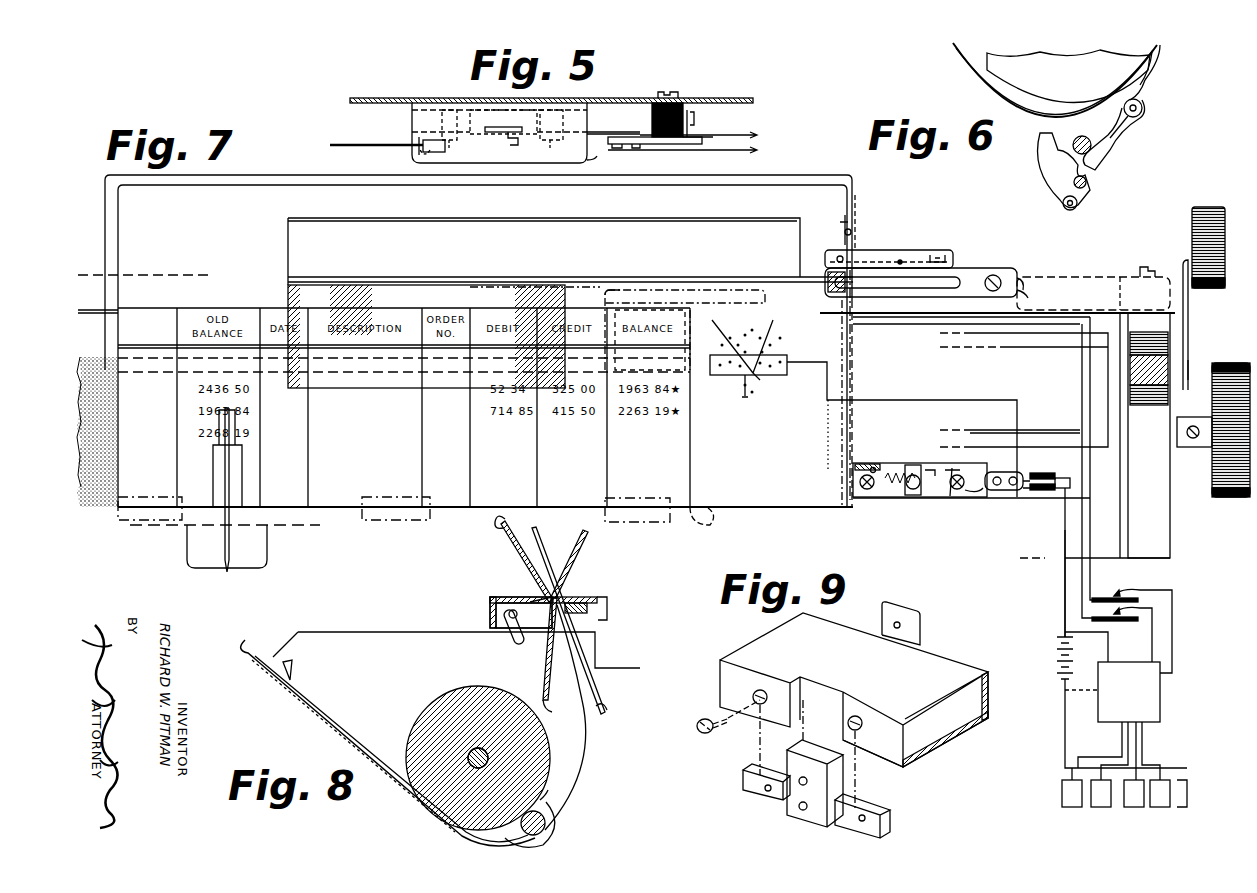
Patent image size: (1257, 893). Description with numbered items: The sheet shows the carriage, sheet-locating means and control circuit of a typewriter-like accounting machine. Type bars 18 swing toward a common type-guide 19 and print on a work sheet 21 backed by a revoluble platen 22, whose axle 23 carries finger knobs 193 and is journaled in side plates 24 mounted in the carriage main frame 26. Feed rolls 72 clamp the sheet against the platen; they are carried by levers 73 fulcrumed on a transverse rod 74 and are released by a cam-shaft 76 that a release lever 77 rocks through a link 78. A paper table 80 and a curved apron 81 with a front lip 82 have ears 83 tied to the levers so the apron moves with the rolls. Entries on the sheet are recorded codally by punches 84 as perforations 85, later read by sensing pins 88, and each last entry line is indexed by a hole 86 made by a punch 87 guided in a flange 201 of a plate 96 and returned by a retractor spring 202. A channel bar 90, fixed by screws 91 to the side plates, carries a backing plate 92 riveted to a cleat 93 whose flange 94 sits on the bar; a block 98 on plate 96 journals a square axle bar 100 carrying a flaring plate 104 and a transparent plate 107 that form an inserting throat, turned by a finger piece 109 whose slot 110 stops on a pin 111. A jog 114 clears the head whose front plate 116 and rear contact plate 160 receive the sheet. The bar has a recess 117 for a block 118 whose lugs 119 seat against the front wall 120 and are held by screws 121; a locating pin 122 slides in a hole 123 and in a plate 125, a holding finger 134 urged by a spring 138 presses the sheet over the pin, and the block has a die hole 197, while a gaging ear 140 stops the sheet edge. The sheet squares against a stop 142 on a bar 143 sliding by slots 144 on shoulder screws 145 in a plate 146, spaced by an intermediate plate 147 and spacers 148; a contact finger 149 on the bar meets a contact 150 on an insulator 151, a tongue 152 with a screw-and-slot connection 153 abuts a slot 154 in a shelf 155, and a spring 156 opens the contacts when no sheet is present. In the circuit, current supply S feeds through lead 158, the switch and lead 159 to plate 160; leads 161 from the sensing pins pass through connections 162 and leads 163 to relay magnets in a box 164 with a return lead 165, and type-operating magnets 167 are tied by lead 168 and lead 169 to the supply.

In FIG. 7, the type bars 18 is at (230, 490).
In FIG. 7, the type-guide 19 is at (242, 456).
In FIG. 5, the work sheet 21 is at (380, 142).
In FIG. 6, the work sheet 21 is at (1160, 48).
In FIG. 7, the work sheet 21 is at (855, 415).
In FIG. 8, the work sheet 21 is at (577, 745).
In FIG. 6, the platen 22 is at (1065, 98).
In FIG. 7, the platen 22 is at (708, 518).
In FIG. 8, the platen 22 is at (440, 702).
In FIG. 7, the platen axle 23 is at (1120, 458).
In FIG. 8, the platen axle 23 is at (470, 752).
In FIG. 7, the side plates 24 is at (1148, 312).
In FIG. 8, the side plates 24 is at (375, 632).
In FIG. 7, the main frame of the carriage 26 is at (1170, 526).
In FIG. 6, the feed rolls 72 is at (1145, 115).
In FIG. 7, the feed rolls 72 is at (362, 522).
In FIG. 8, the feed rolls 72 is at (556, 815).
In FIG. 6, the feed-roll-supporting levers 73 is at (1118, 130).
In FIG. 6, the transverse rod 74 is at (1091, 147).
In FIG. 6, the cam-shaft 76 is at (1087, 182).
In FIG. 7, the feed-roll-release lever 77 is at (1190, 290).
In FIG. 6, the link 78 is at (1043, 168).
In FIG. 7, the link 78 is at (1190, 368).
In FIG. 6, the paper guide 80 is at (965, 65).
In FIG. 8, the paper guide 80 is at (325, 703).
In FIG. 6, the platen apron 81 is at (1147, 80).
In FIG. 8, the platen apron 81 is at (548, 832).
In FIG. 6, the front lip 82 is at (1153, 58).
In FIG. 8, the front lip 82 is at (550, 800).
In FIG. 6, the ears 83 is at (1142, 102).
In FIG. 7, the punches 84 is at (742, 385).
In FIG. 7, the codal perforations 85 is at (775, 372).
In FIG. 7, the sheet locating hole 86 is at (842, 232).
In FIG. 7, the punch 87 is at (828, 282).
In FIG. 7, the sensing pins 88 is at (765, 384).
In FIG. 7, the transverse bar 90 is at (1080, 277).
In FIG. 8, the transverse bar 90 is at (490, 615).
In FIG. 9, the transverse bar 90 is at (925, 691).
In FIG. 7, the screws 91 is at (1142, 266).
In FIG. 7, the transverse plate 92 is at (280, 175).
In FIG. 8, the transverse plate 92 is at (510, 525).
In FIG. 8, the cleat 93 is at (540, 588).
In FIG. 8, the horizontal flange 94 is at (498, 597).
In FIG. 7, the plate 96 is at (995, 268).
In FIG. 8, the plate 96 is at (583, 597).
In FIG. 8, the block 98 is at (607, 610).
In FIG. 7, the square axle bar 100 is at (718, 280).
In FIG. 8, the square axle bar 100 is at (597, 597).
In FIG. 7, the flaring plate 104 is at (660, 218).
In FIG. 8, the flaring plate 104 is at (587, 534).
In FIG. 7, the transparent plate 107 is at (340, 388).
In FIG. 8, the transparent plate 107 is at (603, 712).
In FIG. 8, the finger piece 109 is at (556, 560).
In FIG. 8, the slot 110 is at (512, 648).
In FIG. 8, the pin 111 is at (510, 640).
In FIG. 7, the jog 114 is at (688, 310).
In FIG. 7, the front plate 116 is at (620, 290).
In FIG. 9, the recess 117 is at (806, 690).
In FIG. 9, the block 118 is at (843, 786).
In FIG. 9, the lateral lugs 119 is at (743, 776).
In FIG. 9, the front wall 120 is at (905, 742).
In FIG. 9, the fastening screws 121 is at (705, 734).
In FIG. 7, the sheet locating pin 122 is at (858, 254).
In FIG. 9, the hole 123 is at (800, 790).
In FIG. 9, the plate 125 is at (920, 613).
In FIG. 7, the sheet holding finger 134 is at (900, 260).
In FIG. 7, the spring 138 is at (925, 262).
In FIG. 7, the gaging ear 140 is at (858, 222).
In FIG. 5, the stop 142 is at (420, 150).
In FIG. 7, the stop 142 is at (853, 482).
In FIG. 5, the bar 143 is at (598, 132).
In FIG. 7, the bar 143 is at (880, 490).
In FIG. 7, the slots 144 is at (983, 492).
In FIG. 5, the shoulder screws 145 is at (497, 137).
In FIG. 7, the shoulder screws 145 is at (962, 490).
In FIG. 7, the plate 146 is at (1122, 300).
In FIG. 5, the intermediate plate 147 is at (415, 104).
In FIG. 7, the intermediate plate 147 is at (1000, 472).
In FIG. 5, the spacers 148 is at (448, 98).
In FIG. 5, the contact finger 149 is at (660, 150).
In FIG. 7, the contact finger 149 is at (1060, 490).
In FIG. 5, the contact 150 is at (708, 136).
In FIG. 7, the contact 150 is at (1066, 478).
In FIG. 5, the insulator 151 is at (645, 100).
In FIG. 7, the insulator 151 is at (1042, 472).
In FIG. 5, the tongue 152 is at (512, 148).
In FIG. 7, the tongue 152 is at (918, 463).
In FIG. 7, the screw-and-slot connection 153 is at (913, 490).
In FIG. 5, the slot 154 is at (489, 127).
In FIG. 5, the horizontal shelf 155 is at (607, 160).
In FIG. 7, the horizontal shelf 155 is at (962, 470).
In FIG. 7, the spring 156 is at (935, 470).
In FIG. 7, the lead 158 is at (1062, 598).
In FIG. 7, the lead 159 is at (935, 402).
In FIG. 7, the contact plate 160 is at (788, 358).
In FIG. 7, the lead 161 is at (940, 327).
In FIG. 7, the contact connection 162 is at (1125, 592).
In FIG. 7, the lead 163 is at (1158, 628).
In FIG. 7, the box 164 is at (1142, 701).
In FIG. 7, the common return lead 165 is at (1084, 690).
In FIG. 7, the numeral-type-operating magnets 167 is at (1130, 810).
In FIG. 7, the common lead 168 is at (1065, 742).
In FIG. 7, the lead 169 is at (1112, 643).
In FIG. 7, the finger knobs 193 is at (1230, 497).
In FIG. 9, the die hole 197 is at (808, 812).
In FIG. 7, the flange 201 is at (1022, 276).
In FIG. 7, the retractor spring 202 is at (1020, 296).
In FIG. 7, the current supply S is at (1054, 660).